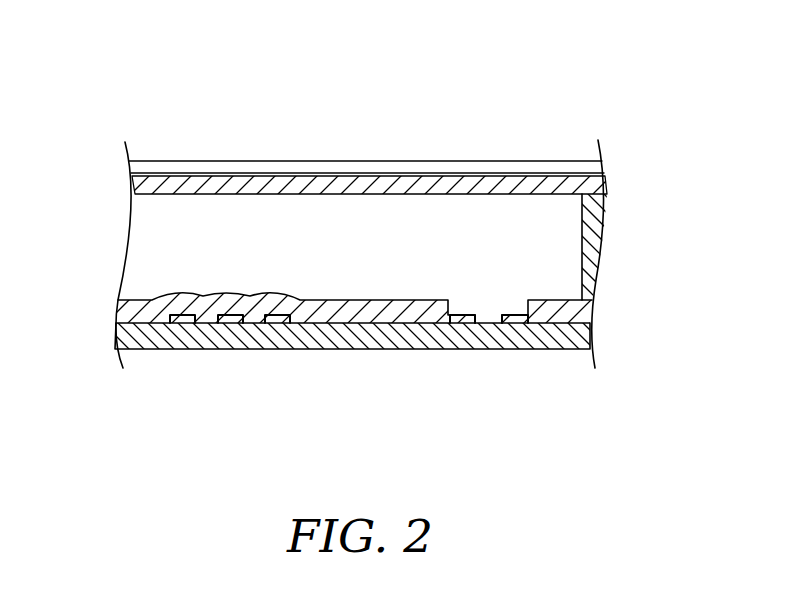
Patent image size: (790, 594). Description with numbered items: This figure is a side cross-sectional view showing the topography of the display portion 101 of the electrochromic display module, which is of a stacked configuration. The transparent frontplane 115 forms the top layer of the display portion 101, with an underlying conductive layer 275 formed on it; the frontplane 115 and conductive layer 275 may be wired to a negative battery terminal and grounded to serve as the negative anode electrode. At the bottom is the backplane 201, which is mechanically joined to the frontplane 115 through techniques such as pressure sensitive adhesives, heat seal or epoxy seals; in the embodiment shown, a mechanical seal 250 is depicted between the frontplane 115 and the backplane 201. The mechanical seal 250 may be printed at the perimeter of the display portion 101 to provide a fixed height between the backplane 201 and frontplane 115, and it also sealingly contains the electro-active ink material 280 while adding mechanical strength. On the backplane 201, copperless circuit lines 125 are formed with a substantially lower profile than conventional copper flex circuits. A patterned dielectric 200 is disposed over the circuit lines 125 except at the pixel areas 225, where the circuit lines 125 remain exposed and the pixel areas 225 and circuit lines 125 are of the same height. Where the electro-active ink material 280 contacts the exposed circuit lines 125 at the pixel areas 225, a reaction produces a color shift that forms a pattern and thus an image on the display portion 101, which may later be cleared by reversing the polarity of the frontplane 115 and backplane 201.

The display portion 101 is at (167, 76).
The transparent frontplane 115 is at (498, 168).
The conductive layer 275 is at (600, 183).
The mechanical seal 250 is at (597, 218).
The electro-active ink material 280 is at (137, 263).
The pixel areas 225 is at (467, 272).
The patterned dielectric 200 is at (118, 315).
The circuit lines 125 is at (222, 320).
The backplane 201 is at (580, 335).